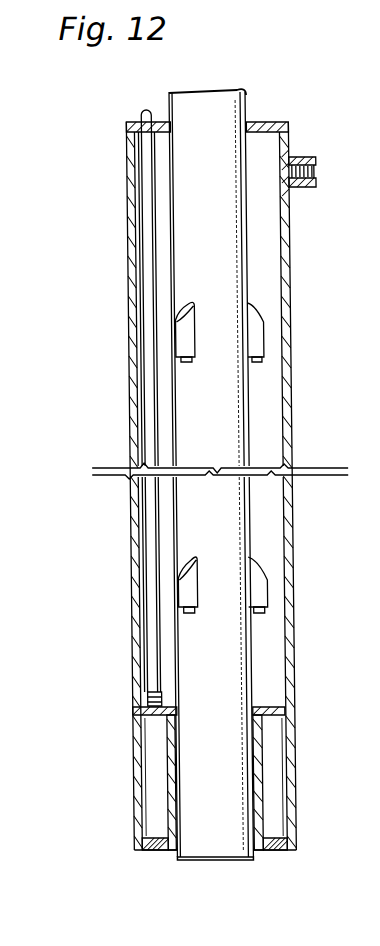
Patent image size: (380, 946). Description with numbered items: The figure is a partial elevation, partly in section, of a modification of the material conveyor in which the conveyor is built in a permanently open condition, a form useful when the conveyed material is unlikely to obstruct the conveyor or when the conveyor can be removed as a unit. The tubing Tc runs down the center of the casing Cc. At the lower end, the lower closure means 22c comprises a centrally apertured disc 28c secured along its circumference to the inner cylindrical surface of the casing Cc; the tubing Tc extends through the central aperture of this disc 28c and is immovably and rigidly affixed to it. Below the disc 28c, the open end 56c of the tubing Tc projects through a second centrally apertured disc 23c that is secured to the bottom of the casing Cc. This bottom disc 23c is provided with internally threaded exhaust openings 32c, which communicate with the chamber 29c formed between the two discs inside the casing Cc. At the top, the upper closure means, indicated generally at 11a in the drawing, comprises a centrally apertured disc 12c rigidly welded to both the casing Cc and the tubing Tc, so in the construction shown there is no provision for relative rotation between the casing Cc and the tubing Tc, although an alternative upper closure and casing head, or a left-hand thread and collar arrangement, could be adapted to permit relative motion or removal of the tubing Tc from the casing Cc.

The upper end of well installation 11a is at (253, 114).
The centrally apertured disc 12c is at (286, 123).
The tubing Tc is at (235, 275).
The casing Cc is at (286, 530).
The centrally apertured disc 28c is at (260, 706).
The chamber 29c is at (262, 745).
The lower closure means 22c is at (117, 754).
The exhaust openings 32c is at (149, 850).
The second centrally apertured disc 23c is at (276, 852).
The open end 56c is at (195, 860).